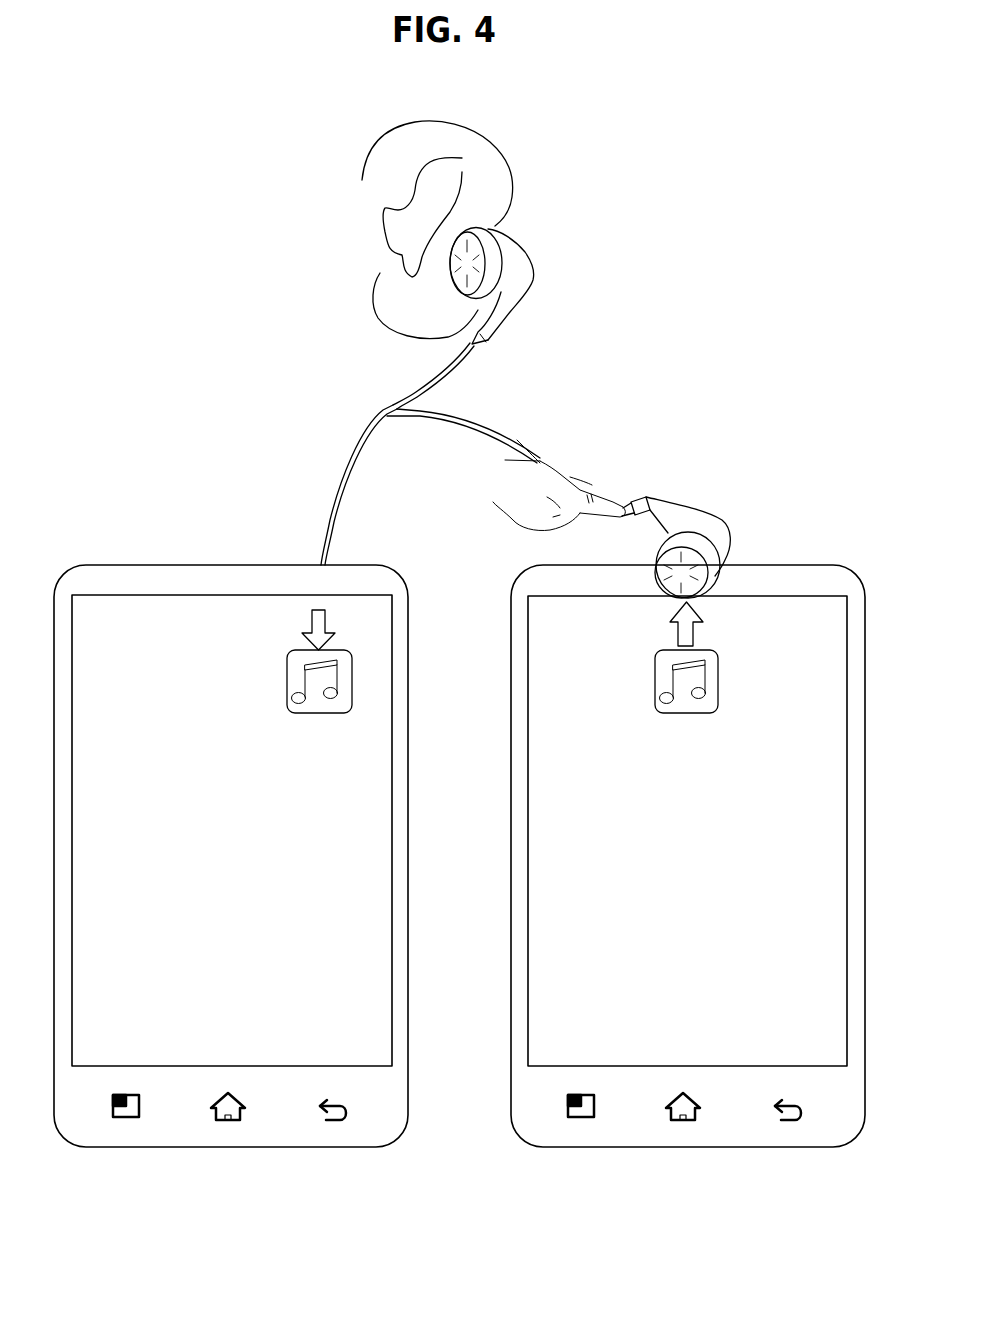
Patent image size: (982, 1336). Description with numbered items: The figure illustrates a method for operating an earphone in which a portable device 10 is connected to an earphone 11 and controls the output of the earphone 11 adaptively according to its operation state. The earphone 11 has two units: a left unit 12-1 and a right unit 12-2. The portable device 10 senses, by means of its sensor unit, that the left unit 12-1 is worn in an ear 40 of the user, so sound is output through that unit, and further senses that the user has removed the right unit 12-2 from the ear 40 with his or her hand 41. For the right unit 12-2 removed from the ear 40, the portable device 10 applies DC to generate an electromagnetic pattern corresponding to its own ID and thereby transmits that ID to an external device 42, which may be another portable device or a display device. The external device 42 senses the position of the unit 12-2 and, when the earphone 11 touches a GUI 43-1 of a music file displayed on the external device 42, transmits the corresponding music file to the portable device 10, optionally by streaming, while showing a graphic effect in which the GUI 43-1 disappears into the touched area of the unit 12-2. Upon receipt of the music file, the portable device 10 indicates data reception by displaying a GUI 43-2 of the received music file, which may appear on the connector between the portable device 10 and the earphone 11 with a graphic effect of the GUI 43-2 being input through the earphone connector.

The ear 40 is at (462, 153).
The left unit 12-1 is at (517, 272).
The right unit 12-2 is at (713, 533).
The earphone 11 is at (331, 478).
The hand of user 41 is at (540, 473).
The portable device 10 is at (232, 1148).
The external device 42 is at (687, 1148).
The GUI of a music file 43-1 is at (718, 682).
The GUI of the received music file 43-2 is at (352, 681).